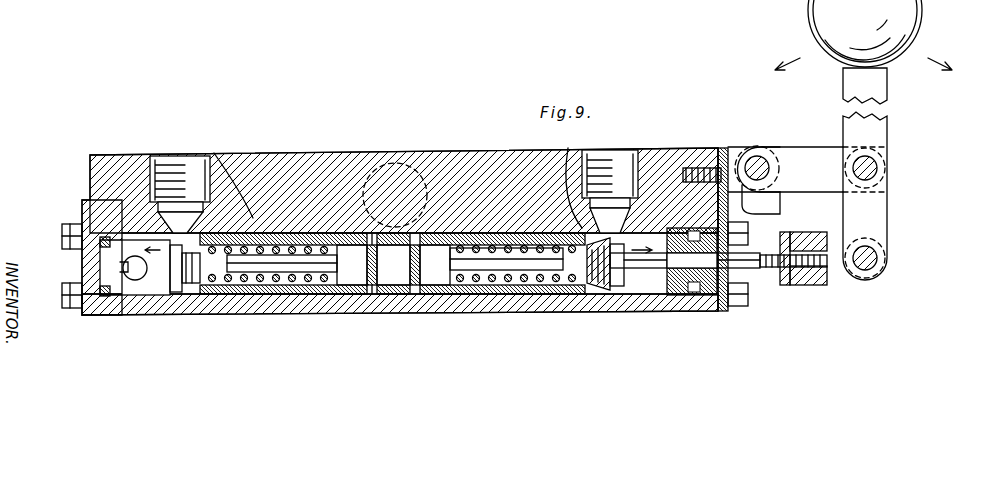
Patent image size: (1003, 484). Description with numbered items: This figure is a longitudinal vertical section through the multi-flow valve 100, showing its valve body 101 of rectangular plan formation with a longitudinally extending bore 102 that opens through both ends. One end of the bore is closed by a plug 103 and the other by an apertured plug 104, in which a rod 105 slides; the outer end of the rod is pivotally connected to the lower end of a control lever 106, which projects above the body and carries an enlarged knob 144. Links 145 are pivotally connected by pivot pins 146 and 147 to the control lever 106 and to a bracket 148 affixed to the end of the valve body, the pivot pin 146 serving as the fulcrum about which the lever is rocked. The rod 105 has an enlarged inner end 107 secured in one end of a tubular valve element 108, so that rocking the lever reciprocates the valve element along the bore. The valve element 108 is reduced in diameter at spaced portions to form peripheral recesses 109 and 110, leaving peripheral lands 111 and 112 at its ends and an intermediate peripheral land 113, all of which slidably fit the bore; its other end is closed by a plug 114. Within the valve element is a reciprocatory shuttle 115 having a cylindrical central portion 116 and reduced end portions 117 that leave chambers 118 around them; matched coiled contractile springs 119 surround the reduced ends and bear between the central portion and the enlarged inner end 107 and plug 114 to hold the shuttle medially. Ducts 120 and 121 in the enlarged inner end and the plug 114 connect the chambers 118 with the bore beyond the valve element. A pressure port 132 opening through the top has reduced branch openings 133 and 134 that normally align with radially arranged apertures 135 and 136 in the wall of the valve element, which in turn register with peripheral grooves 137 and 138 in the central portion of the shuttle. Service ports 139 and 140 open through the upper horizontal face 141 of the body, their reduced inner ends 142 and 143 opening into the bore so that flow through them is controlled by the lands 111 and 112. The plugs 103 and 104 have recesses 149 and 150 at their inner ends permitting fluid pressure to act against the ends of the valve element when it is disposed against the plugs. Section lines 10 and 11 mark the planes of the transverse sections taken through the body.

The multi-flow valve 100 is at (730, 128).
The valve body 101 is at (716, 152).
The bore 102 is at (153, 283).
The plug 103 is at (78, 270).
The apertured plug 104 is at (690, 296).
The rod 105 is at (760, 272).
The control lever 106 is at (888, 256).
The enlarged inner end 107 is at (627, 292).
The tubular valve element 108 is at (450, 312).
The peripheral recess 109 is at (243, 313).
The peripheral recess 110 is at (512, 298).
The peripheral land 111 is at (177, 316).
The peripheral land 112 is at (583, 292).
The intermediate peripheral land 113 is at (415, 296).
The plug 114 is at (205, 285).
The reciprocatory shuttle 115 is at (292, 230).
The cylindrical central portion 116 is at (480, 230).
The reduced end portions 117 is at (232, 160).
The chambers 118 is at (312, 230).
The coiled contractile springs 119 is at (262, 230).
The duct 120 is at (515, 280).
The duct 121 is at (95, 200).
The pressure port 132 is at (404, 165).
The reduced branch opening 133 is at (358, 148).
The reduced branch opening 134 is at (432, 228).
The radially arranged aperture 135 is at (345, 222).
The radially arranged aperture 136 is at (430, 232).
The peripheral groove 137 is at (363, 315).
The peripheral groove 138 is at (407, 325).
The service port 139 is at (180, 160).
The service port 140 is at (616, 165).
The upper horizontal face 141 is at (103, 154).
The reduced inner end 142 is at (150, 200).
The reduced inner end 143 is at (578, 218).
The enlarged knob 144 is at (863, 35).
The links 145 is at (812, 152).
The pivot pin 146 is at (878, 168).
The pivot pin 147 is at (760, 157).
The bracket 148 is at (783, 205).
The recess 149 is at (117, 310).
The recess 150 is at (662, 238).
The section line 10- 10 is at (32, 262).
The section line 11- 11 is at (393, 88).